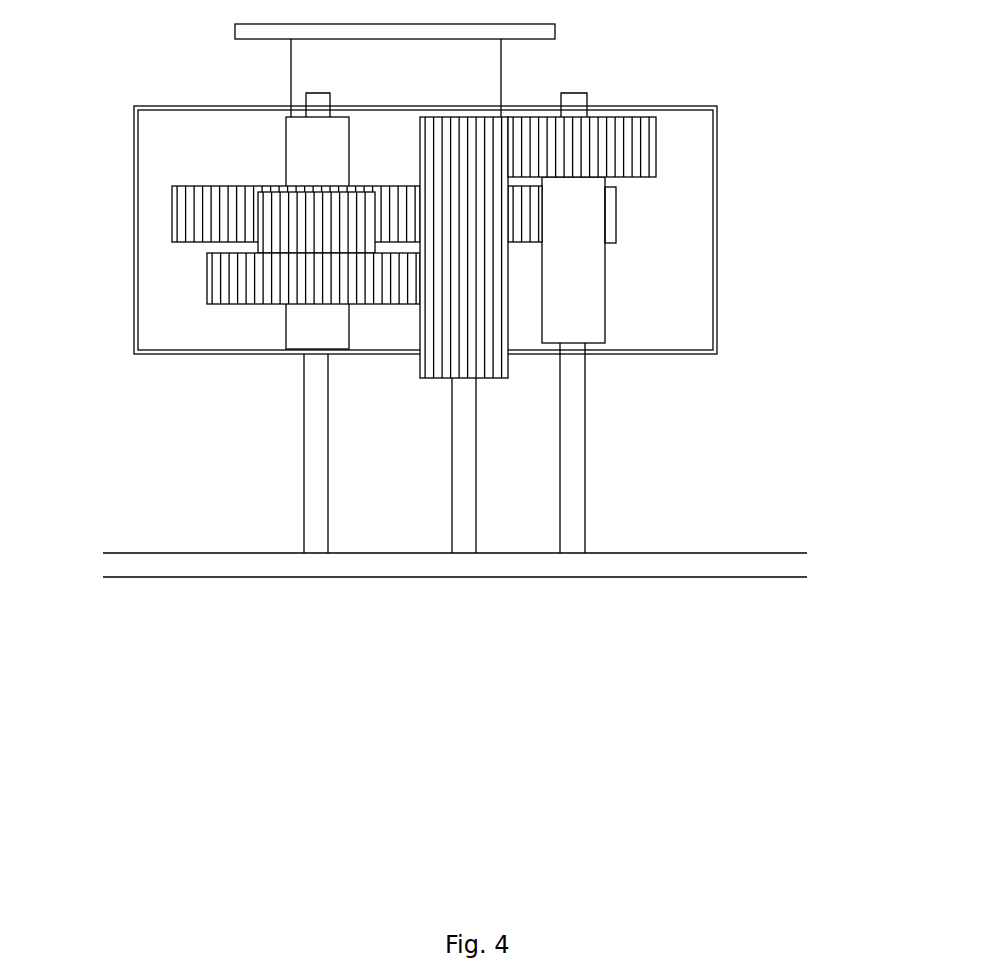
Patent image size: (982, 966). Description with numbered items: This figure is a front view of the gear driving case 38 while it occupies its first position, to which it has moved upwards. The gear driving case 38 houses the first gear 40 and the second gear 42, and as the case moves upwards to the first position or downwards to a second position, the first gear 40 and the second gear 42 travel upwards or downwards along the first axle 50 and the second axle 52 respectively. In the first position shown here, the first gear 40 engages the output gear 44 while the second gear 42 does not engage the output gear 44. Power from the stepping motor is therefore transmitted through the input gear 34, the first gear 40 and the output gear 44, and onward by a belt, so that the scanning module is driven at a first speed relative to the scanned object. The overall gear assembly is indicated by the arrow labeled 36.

The input gear 34 is at (463, 268).
The gear assembly 36 is at (685, 377).
The gear driving case 38 is at (717, 235).
The first gear 40 is at (315, 223).
The second gear 42 is at (573, 163).
The output gear 44 is at (227, 212).
The first axle 50 is at (317, 451).
The second axle 52 is at (571, 455).